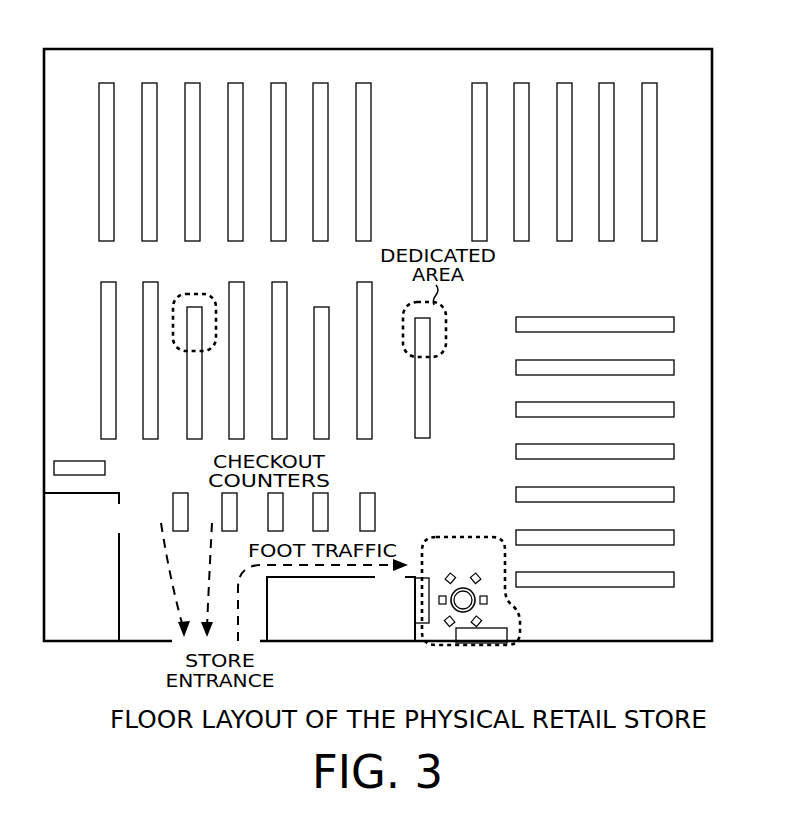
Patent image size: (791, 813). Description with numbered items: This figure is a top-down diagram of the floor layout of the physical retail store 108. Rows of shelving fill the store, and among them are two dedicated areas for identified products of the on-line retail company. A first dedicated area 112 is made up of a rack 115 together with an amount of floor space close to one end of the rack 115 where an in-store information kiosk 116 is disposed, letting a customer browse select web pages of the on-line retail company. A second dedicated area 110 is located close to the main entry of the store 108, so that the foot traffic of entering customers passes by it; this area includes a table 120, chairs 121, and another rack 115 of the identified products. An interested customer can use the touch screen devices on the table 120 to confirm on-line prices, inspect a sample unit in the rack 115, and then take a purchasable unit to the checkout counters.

The physical retail store 108 is at (569, 49).
The dedicated area 110 is at (448, 537).
The dedicated area 112 is at (206, 347).
The rack 115 is at (187, 306).
The in-store information kiosk 116 is at (204, 294).
The table 120 is at (463, 588).
The chairs 121 is at (500, 604).